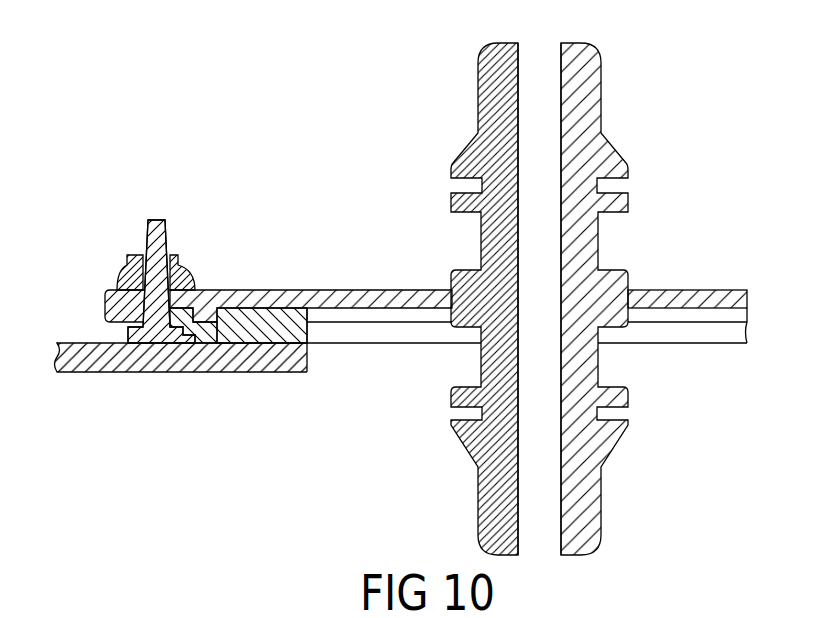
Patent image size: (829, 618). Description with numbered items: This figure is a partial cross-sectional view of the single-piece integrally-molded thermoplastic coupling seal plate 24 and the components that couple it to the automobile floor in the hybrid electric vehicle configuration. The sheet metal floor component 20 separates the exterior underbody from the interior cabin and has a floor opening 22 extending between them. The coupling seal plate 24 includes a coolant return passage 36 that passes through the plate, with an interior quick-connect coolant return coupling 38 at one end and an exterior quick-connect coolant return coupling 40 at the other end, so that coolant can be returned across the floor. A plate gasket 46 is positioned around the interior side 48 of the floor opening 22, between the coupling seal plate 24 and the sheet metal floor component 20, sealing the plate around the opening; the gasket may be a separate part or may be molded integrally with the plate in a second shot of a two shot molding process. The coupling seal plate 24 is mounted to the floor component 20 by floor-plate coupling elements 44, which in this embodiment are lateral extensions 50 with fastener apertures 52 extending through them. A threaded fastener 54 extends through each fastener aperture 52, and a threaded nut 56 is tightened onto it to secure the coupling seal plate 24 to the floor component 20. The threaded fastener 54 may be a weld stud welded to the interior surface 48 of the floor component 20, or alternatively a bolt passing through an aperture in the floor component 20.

The sheet metal floor component 20 is at (112, 361).
The floor opening 22 is at (307, 360).
The coupling seal plate 24 is at (692, 260).
The coolant return passage 36 is at (540, 58).
The interior quick-connect coolant return coupling 38 is at (604, 154).
The exterior quick-connect coolant return coupling 40 is at (490, 490).
The floor-plate coupling elements 44 is at (100, 265).
The plate gasket 46 is at (253, 327).
The interior side of the floor opening 48 is at (232, 347).
The lateral extensions 50 is at (104, 304).
The fastener apertures 52 is at (192, 322).
The threaded fastener 54 is at (170, 239).
The threaded nut 56 is at (133, 258).